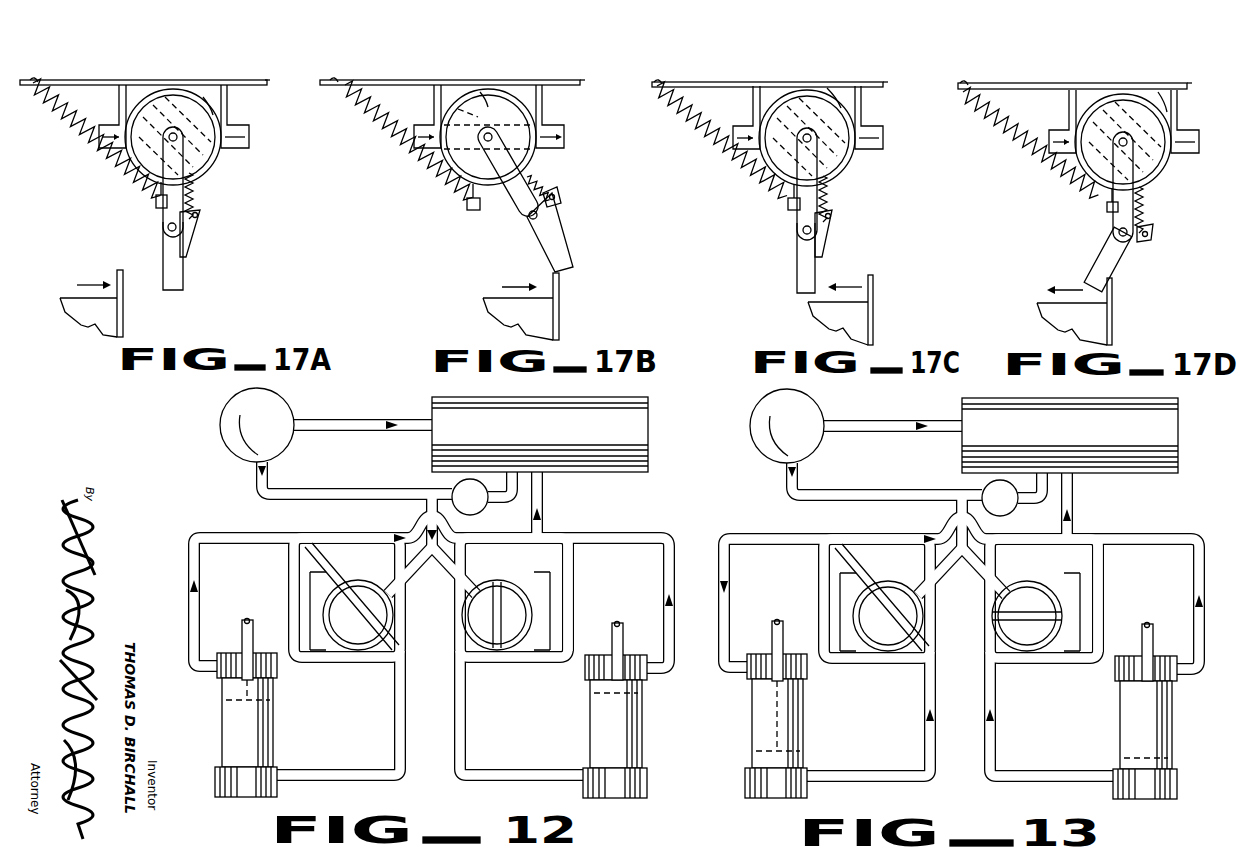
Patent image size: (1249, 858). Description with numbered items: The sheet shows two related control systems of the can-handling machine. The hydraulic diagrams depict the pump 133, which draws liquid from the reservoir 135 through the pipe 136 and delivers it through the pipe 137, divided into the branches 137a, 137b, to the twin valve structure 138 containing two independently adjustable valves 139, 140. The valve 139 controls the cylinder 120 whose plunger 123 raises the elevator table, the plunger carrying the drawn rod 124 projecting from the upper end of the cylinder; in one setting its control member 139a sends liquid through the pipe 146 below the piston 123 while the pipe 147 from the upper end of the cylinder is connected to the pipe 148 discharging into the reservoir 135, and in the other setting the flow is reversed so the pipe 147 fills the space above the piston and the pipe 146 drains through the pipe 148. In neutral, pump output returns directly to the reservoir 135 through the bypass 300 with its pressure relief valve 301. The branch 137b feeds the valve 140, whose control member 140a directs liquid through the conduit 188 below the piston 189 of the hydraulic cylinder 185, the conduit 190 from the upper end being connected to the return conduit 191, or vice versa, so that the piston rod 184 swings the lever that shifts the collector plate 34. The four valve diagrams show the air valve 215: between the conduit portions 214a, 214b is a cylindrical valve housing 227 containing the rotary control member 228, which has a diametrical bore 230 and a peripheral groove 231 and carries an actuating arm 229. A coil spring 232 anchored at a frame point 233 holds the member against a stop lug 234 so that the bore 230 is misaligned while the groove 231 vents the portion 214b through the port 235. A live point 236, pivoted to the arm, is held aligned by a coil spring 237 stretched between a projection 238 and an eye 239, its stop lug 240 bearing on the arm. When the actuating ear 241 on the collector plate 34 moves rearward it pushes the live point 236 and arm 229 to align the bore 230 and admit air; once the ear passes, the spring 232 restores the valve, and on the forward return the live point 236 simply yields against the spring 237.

In FIG. 17A, the collector plate 34 is at (128, 317).
In FIG. 17B, the collector plate 34 is at (556, 319).
In FIG. 17C, the collector plate 34 is at (874, 323).
In FIG. 17D, the collector plate 34 is at (1111, 324).
In FIG. 12, the cylinder 120 is at (250, 730).
In FIG. 13, the cylinder 120 is at (816, 726).
In FIG. 12, the plunger 123 is at (255, 692).
In FIG. 13, the plunger 123 is at (821, 751).
In FIG. 12, the piston rod of left cylinder 124 is at (258, 597).
In FIG. 13, the piston rod of left cylinder 124 is at (773, 667).
In FIG. 12, the pump 133 is at (221, 402).
In FIG. 13, the pump 133 is at (757, 422).
In FIG. 12, the reservoir 135 is at (548, 441).
In FIG. 13, the reservoir 135 is at (1070, 435).
In FIG. 12, the pipe 136 is at (381, 432).
In FIG. 13, the pipe 136 is at (892, 443).
In FIG. 12, the pipe 137 is at (372, 470).
In FIG. 13, the pipe 137 is at (887, 503).
In FIG. 12, the branch 137a is at (414, 565).
In FIG. 13, the branch 137a is at (917, 571).
In FIG. 12, the branch 137b is at (452, 568).
In FIG. 13, the branch 137b is at (1007, 571).
In FIG. 12, the twin valve structure 138 is at (375, 668).
In FIG. 13, the twin valve structure 138 is at (877, 623).
In FIG. 12, the valve 139 is at (395, 600).
In FIG. 13, the valve 139 is at (915, 612).
In FIG. 12, the control member 139a is at (380, 640).
In FIG. 13, the control member 139a is at (882, 615).
In FIG. 12, the valve 140 is at (468, 615).
In FIG. 13, the valve 140 is at (1019, 598).
In FIG. 12, the control member 140a is at (500, 640).
In FIG. 13, the control member 140a is at (1046, 630).
In FIG. 12, the pipe 146 is at (382, 770).
In FIG. 13, the pipe 146 is at (868, 729).
In FIG. 12, the pipe 147 is at (243, 540).
In FIG. 13, the pipe 147 is at (761, 603).
In FIG. 12, the pipe 148 is at (313, 538).
In FIG. 13, the pipe 148 is at (960, 525).
In FIG. 12, the piston rod 184 is at (640, 597).
In FIG. 13, the piston rod 184 is at (1146, 632).
In FIG. 12, the hydraulic cylinder 185 is at (605, 710).
In FIG. 13, the hydraulic cylinder 185 is at (1110, 727).
In FIG. 12, the conduit 188 is at (535, 757).
In FIG. 13, the conduit 188 is at (1051, 714).
In FIG. 12, the piston 189 is at (600, 693).
In FIG. 13, the piston 189 is at (1105, 758).
In FIG. 12, the conduit 190 is at (640, 535).
In FIG. 13, the conduit 190 is at (1159, 604).
In FIG. 12, the conduit 191 is at (575, 580).
In FIG. 13, the conduit 191 is at (1134, 595).
In FIG. 12, the bypass 300 is at (506, 484).
In FIG. 13, the bypass 300 is at (1075, 506).
In FIG. 12, the pressure relief valve 301 is at (474, 513).
In FIG. 13, the pressure relief valve 301 is at (1027, 508).
In FIG. 17A, the conduit portion 214a is at (98, 116).
In FIG. 17B, the conduit portion 214a is at (421, 115).
In FIG. 17C, the conduit portion 214a is at (738, 117).
In FIG. 17D, the conduit portion 214a is at (1053, 121).
In FIG. 17A, the conduit portion 214b is at (274, 116).
In FIG. 17B, the conduit portion 214b is at (593, 116).
In FIG. 17C, the conduit portion 214b is at (907, 117).
In FIG. 17D, the conduit portion 214b is at (1210, 121).
In FIG. 17A, the valve 215 is at (143, 66).
In FIG. 17B, the valve 215 is at (450, 65).
In FIG. 17C, the valve 215 is at (771, 66).
In FIG. 17D, the valve 215 is at (1073, 73).
In FIG. 17A, the cylindrical valve housing 227 is at (235, 182).
In FIG. 17B, the cylindrical valve housing 227 is at (552, 171).
In FIG. 17C, the cylindrical valve housing 227 is at (860, 184).
In FIG. 17D, the cylindrical valve housing 227 is at (1173, 187).
In FIG. 17A, the control member 228 is at (173, 137).
In FIG. 17B, the control member 228 is at (488, 137).
In FIG. 17C, the control member 228 is at (807, 138).
In FIG. 17D, the control member 228 is at (1123, 142).
In FIG. 17A, the actuating arm 229 is at (135, 225).
In FIG. 17B, the actuating arm 229 is at (492, 224).
In FIG. 17C, the actuating arm 229 is at (774, 231).
In FIG. 17D, the actuating arm 229 is at (1089, 230).
In FIG. 17A, the diametrical bore 230 is at (223, 136).
In FIG. 17B, the diametrical bore 230 is at (470, 150).
In FIG. 17C, the diametrical bore 230 is at (850, 137).
In FIG. 17D, the diametrical bore 230 is at (1161, 158).
In FIG. 17A, the peripheral groove 231 is at (245, 98).
In FIG. 17B, the peripheral groove 231 is at (478, 77).
In FIG. 17C, the peripheral groove 231 is at (868, 84).
In FIG. 17D, the peripheral groove 231 is at (1203, 91).
In FIG. 17A, the coil spring 232 is at (97, 139).
In FIG. 17B, the coil spring 232 is at (409, 141).
In FIG. 17C, the coil spring 232 is at (722, 141).
In FIG. 17D, the coil spring 232 is at (1030, 144).
In FIG. 17A, the point 233 is at (71, 65).
In FIG. 17B, the point 233 is at (375, 64).
In FIG. 17C, the point 233 is at (697, 66).
In FIG. 17D, the point 233 is at (1002, 68).
In FIG. 17A, the stop lug 234 is at (120, 198).
In FIG. 17B, the stop lug 234 is at (451, 198).
In FIG. 17C, the stop lug 234 is at (755, 200).
In FIG. 17D, the stop lug 234 is at (1073, 201).
In FIG. 17A, the port 235 is at (280, 82).
In FIG. 17B, the port 235 is at (590, 90).
In FIG. 17C, the port 235 is at (900, 95).
In FIG. 17D, the port 235 is at (1209, 98).
In FIG. 17A, the live point 236 is at (220, 256).
In FIG. 17B, the live point 236 is at (520, 232).
In FIG. 17C, the live point 236 is at (777, 258).
In FIG. 17D, the live point 236 is at (1082, 259).
In FIG. 17A, the coil spring 237 is at (248, 196).
In FIG. 17B, the coil spring 237 is at (578, 188).
In FIG. 17C, the coil spring 237 is at (873, 199).
In FIG. 17D, the coil spring 237 is at (1184, 210).
In FIG. 17A, the projection 238 is at (252, 223).
In FIG. 17B, the projection 238 is at (592, 206).
In FIG. 17C, the projection 238 is at (877, 221).
In FIG. 17D, the projection 238 is at (1188, 257).
In FIG. 17A, the eye 239 is at (157, 149).
In FIG. 17B, the eye 239 is at (558, 150).
In FIG. 17C, the eye 239 is at (790, 151).
In FIG. 17D, the eye 239 is at (1108, 157).
In FIG. 17A, the stop lug 240 is at (247, 233).
In FIG. 17B, the stop lug 240 is at (590, 212).
In FIG. 17C, the stop lug 240 is at (872, 233).
In FIG. 17D, the stop lug 240 is at (1185, 238).
In FIG. 17A, the actuating ear 241 is at (94, 286).
In FIG. 17B, the actuating ear 241 is at (569, 286).
In FIG. 17C, the actuating ear 241 is at (879, 297).
In FIG. 17D, the actuating ear 241 is at (1140, 311).